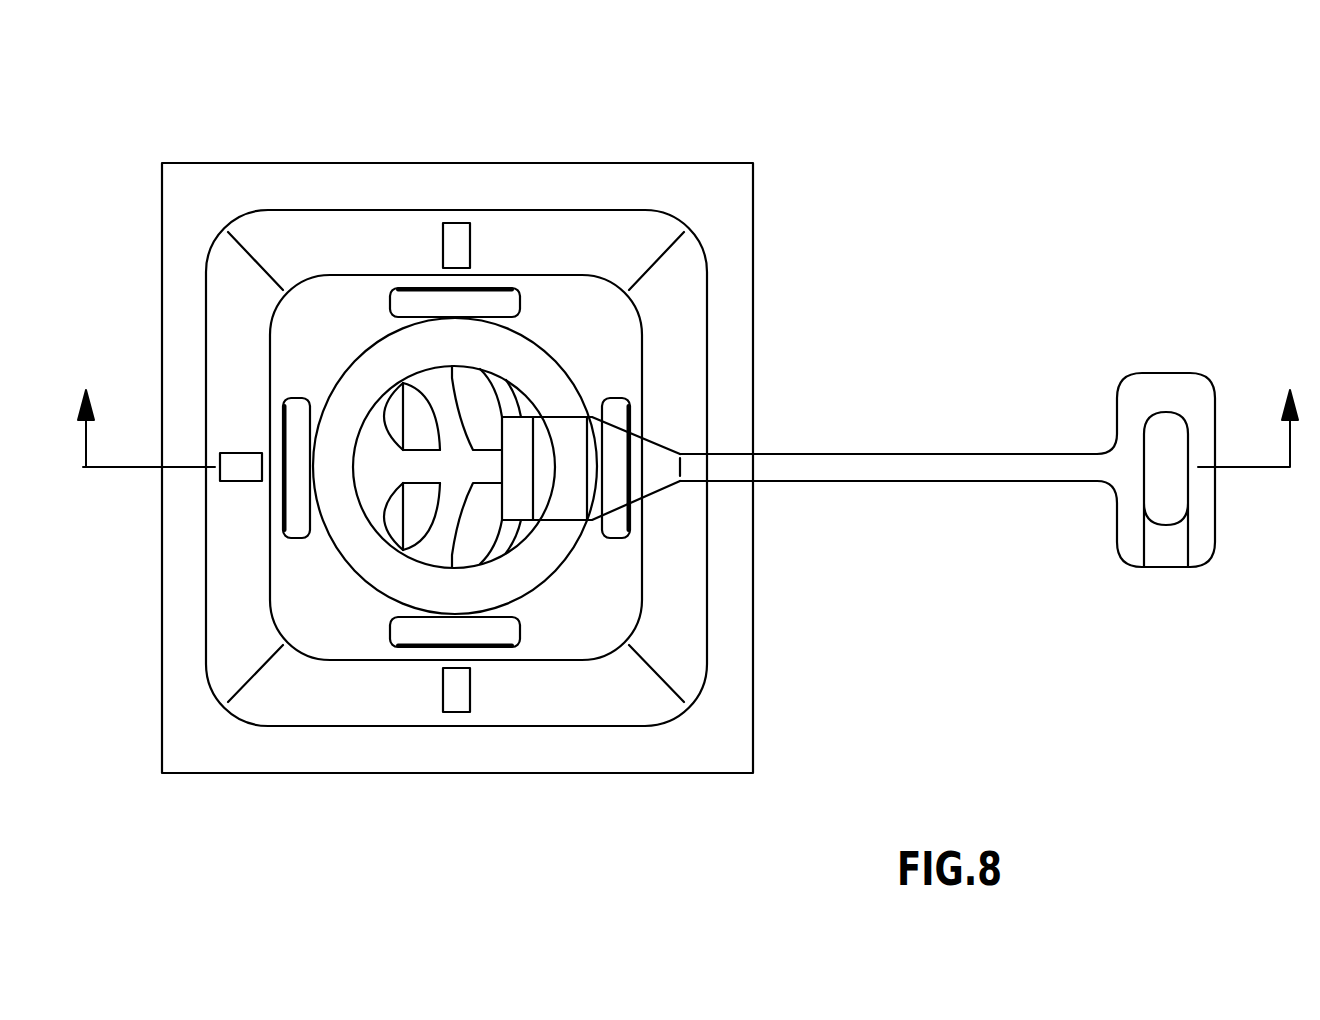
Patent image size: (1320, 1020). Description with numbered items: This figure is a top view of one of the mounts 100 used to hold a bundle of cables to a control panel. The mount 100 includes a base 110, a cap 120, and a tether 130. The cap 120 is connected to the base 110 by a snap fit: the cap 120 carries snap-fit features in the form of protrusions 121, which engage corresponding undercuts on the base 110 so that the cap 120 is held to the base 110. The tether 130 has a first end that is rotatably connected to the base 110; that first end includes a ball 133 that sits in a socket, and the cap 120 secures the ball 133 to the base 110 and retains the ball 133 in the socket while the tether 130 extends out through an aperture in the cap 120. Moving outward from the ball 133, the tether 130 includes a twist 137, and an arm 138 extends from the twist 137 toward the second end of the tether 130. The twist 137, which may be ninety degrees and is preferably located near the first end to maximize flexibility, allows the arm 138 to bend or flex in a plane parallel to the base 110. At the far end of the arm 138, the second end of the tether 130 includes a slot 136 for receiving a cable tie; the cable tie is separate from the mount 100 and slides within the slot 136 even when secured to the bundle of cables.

The mount 100 is at (226, 134).
The base 110 is at (652, 750).
The cap 120 is at (303, 697).
The protrusions 121 is at (453, 233).
The tether 130 is at (959, 511).
The ball 133 is at (372, 450).
The slot 136 is at (1163, 512).
The twist 137 is at (643, 463).
The arm 138 is at (968, 470).